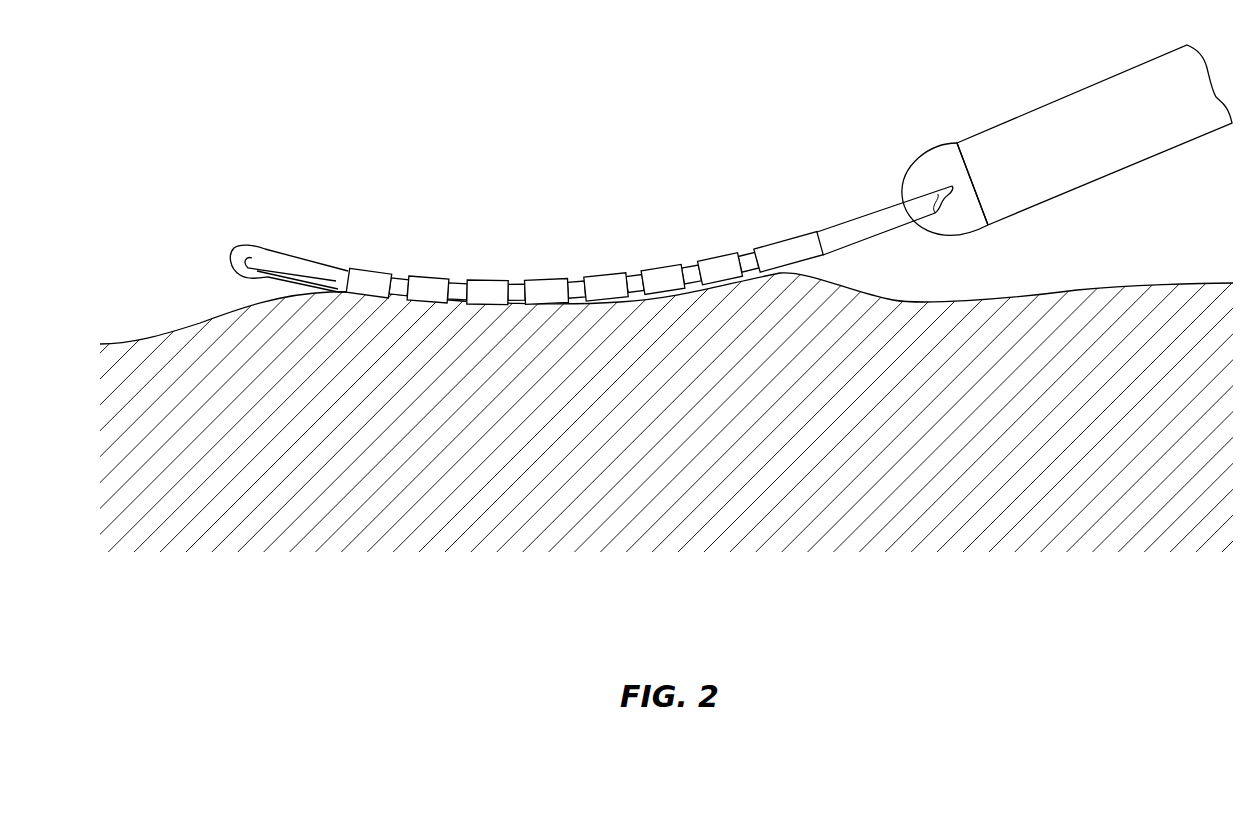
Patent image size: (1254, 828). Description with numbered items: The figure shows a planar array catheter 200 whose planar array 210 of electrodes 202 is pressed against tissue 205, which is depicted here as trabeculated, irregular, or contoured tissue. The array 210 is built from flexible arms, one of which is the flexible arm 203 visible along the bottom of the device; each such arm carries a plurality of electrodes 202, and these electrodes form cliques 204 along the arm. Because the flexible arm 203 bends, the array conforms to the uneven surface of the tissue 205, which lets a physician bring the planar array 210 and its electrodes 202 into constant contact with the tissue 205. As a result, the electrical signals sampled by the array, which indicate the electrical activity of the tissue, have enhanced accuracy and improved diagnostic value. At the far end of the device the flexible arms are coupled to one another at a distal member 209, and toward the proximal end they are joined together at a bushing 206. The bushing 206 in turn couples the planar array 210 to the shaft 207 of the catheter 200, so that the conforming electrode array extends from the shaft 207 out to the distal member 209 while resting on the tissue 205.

The planar array catheter 200 is at (473, 81).
The electrodes 202 is at (786, 243).
The flexible arm 203 is at (857, 225).
The cliques 204 is at (718, 262).
The tissue 205 is at (1123, 325).
The bushing 206 is at (932, 163).
The shaft 207 is at (1058, 93).
The distal member 209 is at (262, 243).
The planar array 210 is at (589, 227).